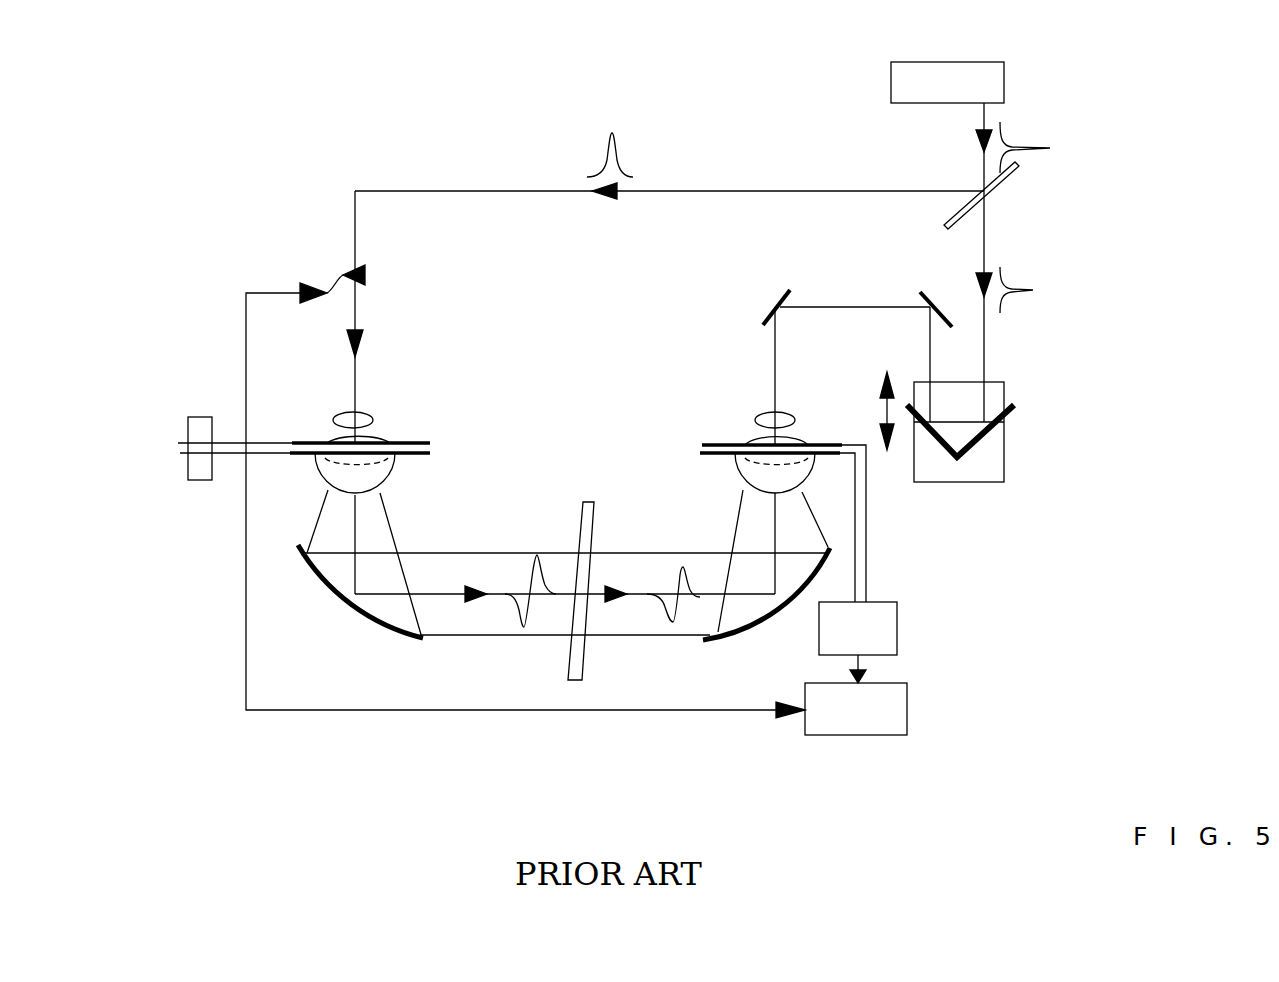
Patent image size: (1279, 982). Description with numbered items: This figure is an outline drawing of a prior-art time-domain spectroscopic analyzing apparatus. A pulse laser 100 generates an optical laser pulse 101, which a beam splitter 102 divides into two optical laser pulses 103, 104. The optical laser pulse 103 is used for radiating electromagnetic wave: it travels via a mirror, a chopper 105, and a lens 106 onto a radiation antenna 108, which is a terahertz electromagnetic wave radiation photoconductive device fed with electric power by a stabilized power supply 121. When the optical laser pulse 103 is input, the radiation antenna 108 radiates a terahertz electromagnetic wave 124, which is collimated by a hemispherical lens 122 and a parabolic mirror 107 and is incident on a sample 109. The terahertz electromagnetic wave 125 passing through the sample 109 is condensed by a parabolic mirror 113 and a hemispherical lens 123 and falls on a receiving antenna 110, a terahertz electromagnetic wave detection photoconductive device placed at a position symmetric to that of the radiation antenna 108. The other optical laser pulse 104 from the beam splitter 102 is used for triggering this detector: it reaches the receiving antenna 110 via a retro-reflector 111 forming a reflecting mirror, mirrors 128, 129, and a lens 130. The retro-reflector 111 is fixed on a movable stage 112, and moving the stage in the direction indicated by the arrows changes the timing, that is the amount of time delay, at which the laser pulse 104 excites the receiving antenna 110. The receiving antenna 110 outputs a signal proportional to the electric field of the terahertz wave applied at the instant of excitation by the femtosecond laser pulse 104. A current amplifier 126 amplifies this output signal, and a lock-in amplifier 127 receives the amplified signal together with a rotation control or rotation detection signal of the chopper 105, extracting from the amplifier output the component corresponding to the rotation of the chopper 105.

The pulse laser 100 is at (1004, 85).
The optical laser pulse 101 is at (1050, 148).
The beam splitter 102 is at (1012, 175).
The optical laser pulse 103 is at (617, 143).
The optical laser pulse 104 is at (1033, 290).
The chopper 105 is at (367, 277).
The lens 106 is at (340, 410).
The parabolic mirror 107 is at (345, 602).
The radiation antenna 108 is at (413, 442).
The sample 109 is at (583, 662).
The receiving antenna 110 is at (717, 440).
The retro-reflector 111 is at (980, 440).
The movable stage 112 is at (957, 482).
The parabolic mirror 113 is at (770, 615).
The stabilized power supply 121 is at (185, 430).
The hemispherical lens 122 is at (317, 475).
The hemispherical lens 123 is at (735, 472).
The terahertz electromagnetic wave 124 is at (532, 567).
The terahertz electromagnetic wave 125 is at (680, 577).
The current amplifier 126 is at (897, 630).
The lock-in amplifier 127 is at (907, 712).
The mirror 128 is at (923, 287).
The mirror 129 is at (782, 292).
The lens 130 is at (763, 413).